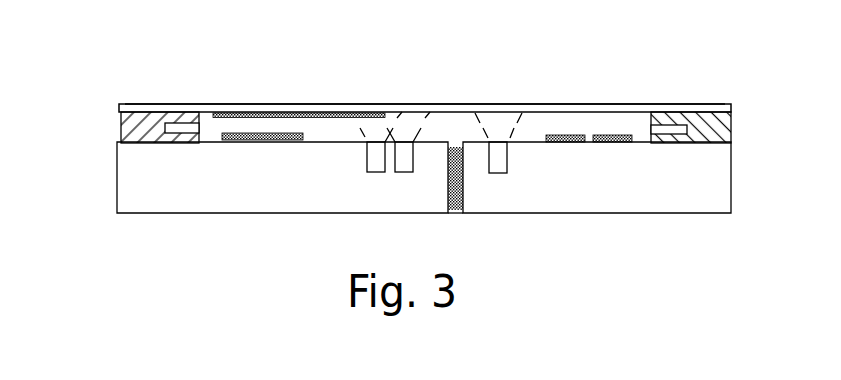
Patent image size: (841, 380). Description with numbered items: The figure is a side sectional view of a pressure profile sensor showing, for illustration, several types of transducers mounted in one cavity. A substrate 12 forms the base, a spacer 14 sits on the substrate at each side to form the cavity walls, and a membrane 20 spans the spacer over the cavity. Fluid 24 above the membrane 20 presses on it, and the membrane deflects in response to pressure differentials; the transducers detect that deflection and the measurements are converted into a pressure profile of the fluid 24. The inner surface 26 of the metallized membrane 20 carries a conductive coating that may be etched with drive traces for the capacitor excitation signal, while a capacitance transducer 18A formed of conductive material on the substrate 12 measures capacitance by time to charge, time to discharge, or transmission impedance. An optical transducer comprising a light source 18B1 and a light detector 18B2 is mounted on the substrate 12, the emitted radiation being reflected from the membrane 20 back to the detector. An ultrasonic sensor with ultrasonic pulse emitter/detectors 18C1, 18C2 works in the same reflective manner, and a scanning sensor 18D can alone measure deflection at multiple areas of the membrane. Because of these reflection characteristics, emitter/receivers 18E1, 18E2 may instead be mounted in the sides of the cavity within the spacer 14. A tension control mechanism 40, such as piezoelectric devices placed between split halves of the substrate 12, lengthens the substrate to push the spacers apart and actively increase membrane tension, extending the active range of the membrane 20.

The substrate 12 is at (120, 177).
The spacer 14 is at (121, 127).
The membrane 20 is at (307, 103).
The fluid 24 is at (578, 83).
The inner surface of the metallized membrane 26 is at (312, 118).
The capacitance transducer 18A is at (262, 141).
The light source 18B1 is at (376, 172).
The light detector 18B2 is at (404, 172).
The ultrasonic pulse emitter/detector 18C1 is at (570, 142).
The ultrasonic pulse emitter/detector 18C2 is at (617, 142).
The scanning sensor 18D is at (498, 173).
The emitter/receiver mounted on cavity side 18E1 is at (168, 134).
The emitter/receiver mounted on cavity side 18E2 is at (668, 134).
The tension control mechanism 40 is at (453, 213).